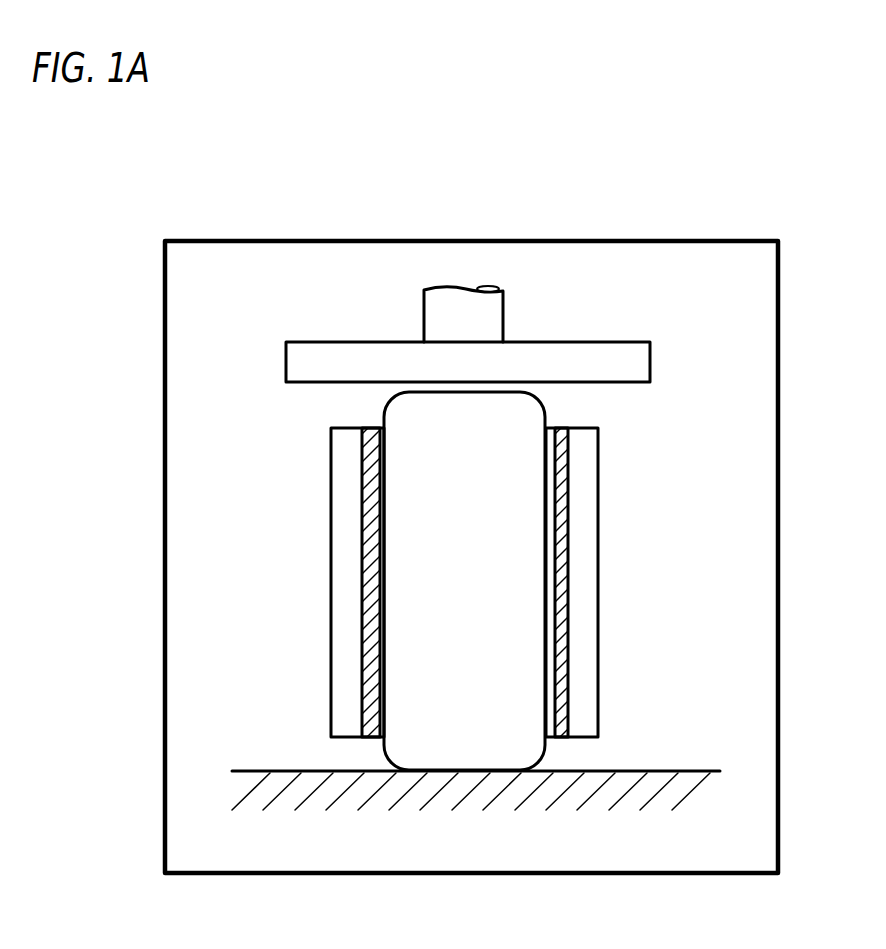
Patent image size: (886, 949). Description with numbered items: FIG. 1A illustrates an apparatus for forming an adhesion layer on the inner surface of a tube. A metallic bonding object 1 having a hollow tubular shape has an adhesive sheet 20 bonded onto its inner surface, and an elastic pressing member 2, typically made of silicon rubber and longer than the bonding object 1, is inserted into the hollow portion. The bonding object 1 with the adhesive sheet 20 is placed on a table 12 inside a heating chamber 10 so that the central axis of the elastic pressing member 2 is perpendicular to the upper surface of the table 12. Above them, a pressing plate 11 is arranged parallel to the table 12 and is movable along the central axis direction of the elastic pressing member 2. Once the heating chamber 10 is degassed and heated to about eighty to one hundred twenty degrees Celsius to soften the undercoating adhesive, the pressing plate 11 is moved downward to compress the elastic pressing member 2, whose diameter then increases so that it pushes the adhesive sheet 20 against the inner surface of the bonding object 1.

The heating chamber 10 is at (565, 240).
The pressing plate 11 is at (650, 342).
The bonding object 1 is at (600, 507).
The adhesive sheet 20 is at (567, 682).
The elastic pressing member 2 is at (533, 598).
The table 12 is at (672, 771).